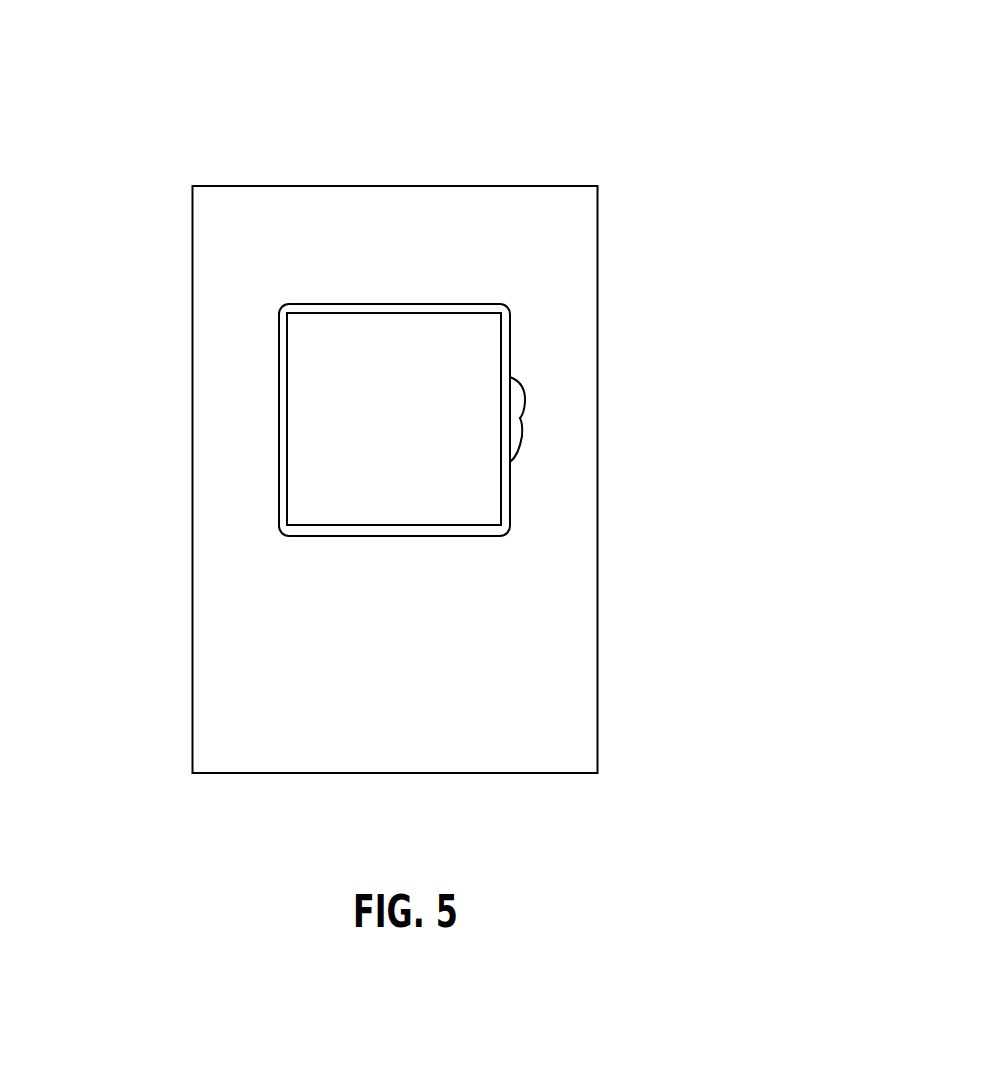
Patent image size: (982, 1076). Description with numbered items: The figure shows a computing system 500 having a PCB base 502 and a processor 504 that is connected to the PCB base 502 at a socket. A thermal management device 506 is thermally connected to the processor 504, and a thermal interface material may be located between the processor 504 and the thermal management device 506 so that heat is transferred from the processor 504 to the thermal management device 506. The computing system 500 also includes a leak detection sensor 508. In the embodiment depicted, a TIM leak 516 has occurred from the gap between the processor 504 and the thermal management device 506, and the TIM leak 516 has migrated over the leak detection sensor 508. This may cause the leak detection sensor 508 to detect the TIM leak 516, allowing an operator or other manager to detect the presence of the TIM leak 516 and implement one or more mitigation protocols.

The computing system 500 is at (728, 67).
The PCB base 502 is at (572, 274).
The processor 504 is at (503, 495).
The thermal management device 506 is at (464, 332).
The leak detection sensor 508 is at (278, 333).
The TIM leak 516 is at (525, 415).